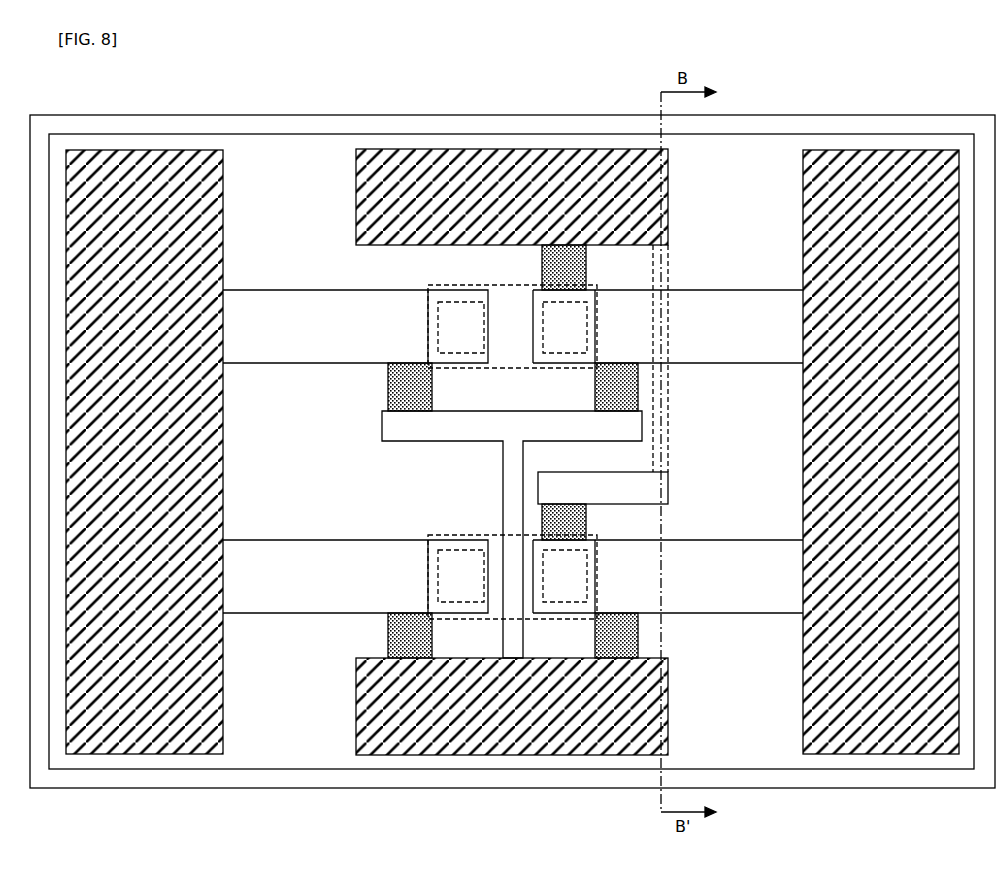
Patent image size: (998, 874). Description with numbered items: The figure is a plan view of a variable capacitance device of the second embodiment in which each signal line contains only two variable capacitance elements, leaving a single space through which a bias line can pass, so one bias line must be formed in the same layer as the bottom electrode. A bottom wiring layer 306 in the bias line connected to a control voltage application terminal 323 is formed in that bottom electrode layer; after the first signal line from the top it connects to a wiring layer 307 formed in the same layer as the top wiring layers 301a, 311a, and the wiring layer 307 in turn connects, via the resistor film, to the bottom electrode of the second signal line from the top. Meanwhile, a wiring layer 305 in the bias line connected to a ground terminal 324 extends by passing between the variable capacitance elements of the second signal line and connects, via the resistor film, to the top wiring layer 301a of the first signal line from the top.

The control voltage application terminal 323 is at (668, 197).
The ground terminal 324 is at (668, 707).
The top wiring layer 301a is at (702, 298).
The top wiring layer 311a is at (702, 548).
The wiring layer 305 is at (404, 443).
The bottom wiring layer 306 is at (668, 428).
The wiring layer 307 is at (596, 494).